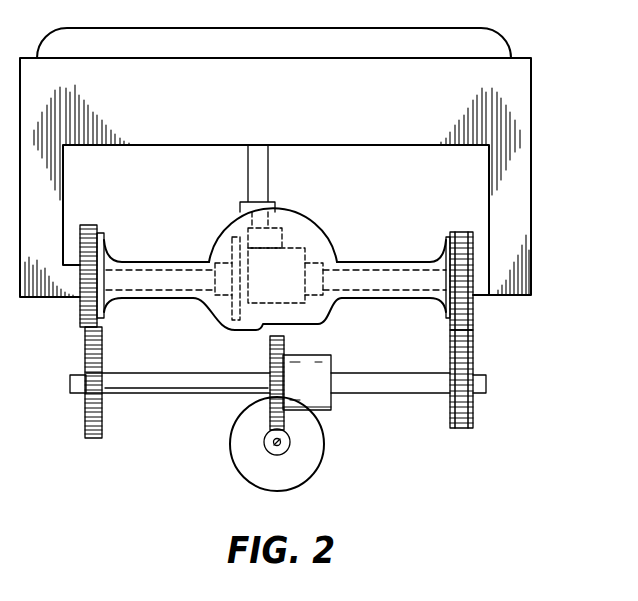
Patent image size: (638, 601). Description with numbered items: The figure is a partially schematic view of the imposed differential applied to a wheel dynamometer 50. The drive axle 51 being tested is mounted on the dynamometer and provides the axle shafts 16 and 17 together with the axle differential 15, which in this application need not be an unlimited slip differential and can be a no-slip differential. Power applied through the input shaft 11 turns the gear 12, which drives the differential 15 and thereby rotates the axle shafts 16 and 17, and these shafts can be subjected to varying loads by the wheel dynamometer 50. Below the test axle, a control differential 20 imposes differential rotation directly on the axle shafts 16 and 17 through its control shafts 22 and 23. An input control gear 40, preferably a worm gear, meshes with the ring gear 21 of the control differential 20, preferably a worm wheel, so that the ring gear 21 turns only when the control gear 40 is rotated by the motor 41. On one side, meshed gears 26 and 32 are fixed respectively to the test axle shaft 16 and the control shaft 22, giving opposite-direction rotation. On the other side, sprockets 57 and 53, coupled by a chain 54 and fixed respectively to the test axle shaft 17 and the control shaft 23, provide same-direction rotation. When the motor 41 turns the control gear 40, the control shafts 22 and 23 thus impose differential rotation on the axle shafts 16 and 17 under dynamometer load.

The input shaft 11 is at (264, 160).
The gear 12 is at (238, 230).
The axle differential 15 is at (290, 256).
The axle shaft 16 is at (160, 274).
The axle shaft 17 is at (382, 280).
The control differential 20 is at (333, 403).
The ring gear 21 is at (270, 348).
The control shaft 22 is at (172, 388).
The control shaft 23 is at (416, 374).
The gear 26 is at (88, 225).
The gear 32 is at (86, 428).
The input control gear 40 is at (264, 443).
The motor 41 is at (324, 447).
The wheel dynamometer 50 is at (518, 58).
The drive axle 51 is at (355, 262).
The sprocket 53 is at (467, 428).
The chain 54 is at (473, 327).
The sprocket 57 is at (460, 232).